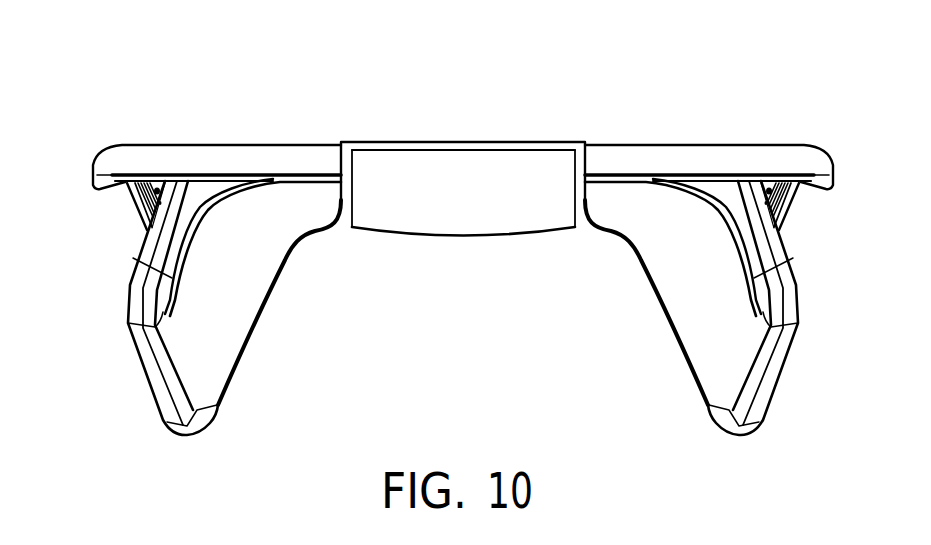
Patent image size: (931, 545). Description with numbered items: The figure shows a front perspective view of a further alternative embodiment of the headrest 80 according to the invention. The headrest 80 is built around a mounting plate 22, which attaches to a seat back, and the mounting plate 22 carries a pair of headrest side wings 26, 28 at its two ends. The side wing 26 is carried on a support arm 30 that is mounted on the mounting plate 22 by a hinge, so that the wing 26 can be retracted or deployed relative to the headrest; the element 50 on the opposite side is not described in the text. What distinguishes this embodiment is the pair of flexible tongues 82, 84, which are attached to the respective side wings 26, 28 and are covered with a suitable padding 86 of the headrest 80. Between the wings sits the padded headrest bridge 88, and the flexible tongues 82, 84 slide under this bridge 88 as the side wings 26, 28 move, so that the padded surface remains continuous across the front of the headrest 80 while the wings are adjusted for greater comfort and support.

The headrest 80 is at (258, 86).
The mounting plate 22 is at (300, 147).
The headrest side wing 26 is at (133, 287).
The headrest side wing 28 is at (743, 338).
The support arm 30 is at (133, 203).
The second mounting bracket 50 is at (793, 200).
The flexible tongue 82 is at (238, 313).
The flexible tongue 84 is at (693, 340).
The padding 86 is at (253, 238).
The padded headrest bridge 88 is at (457, 162).